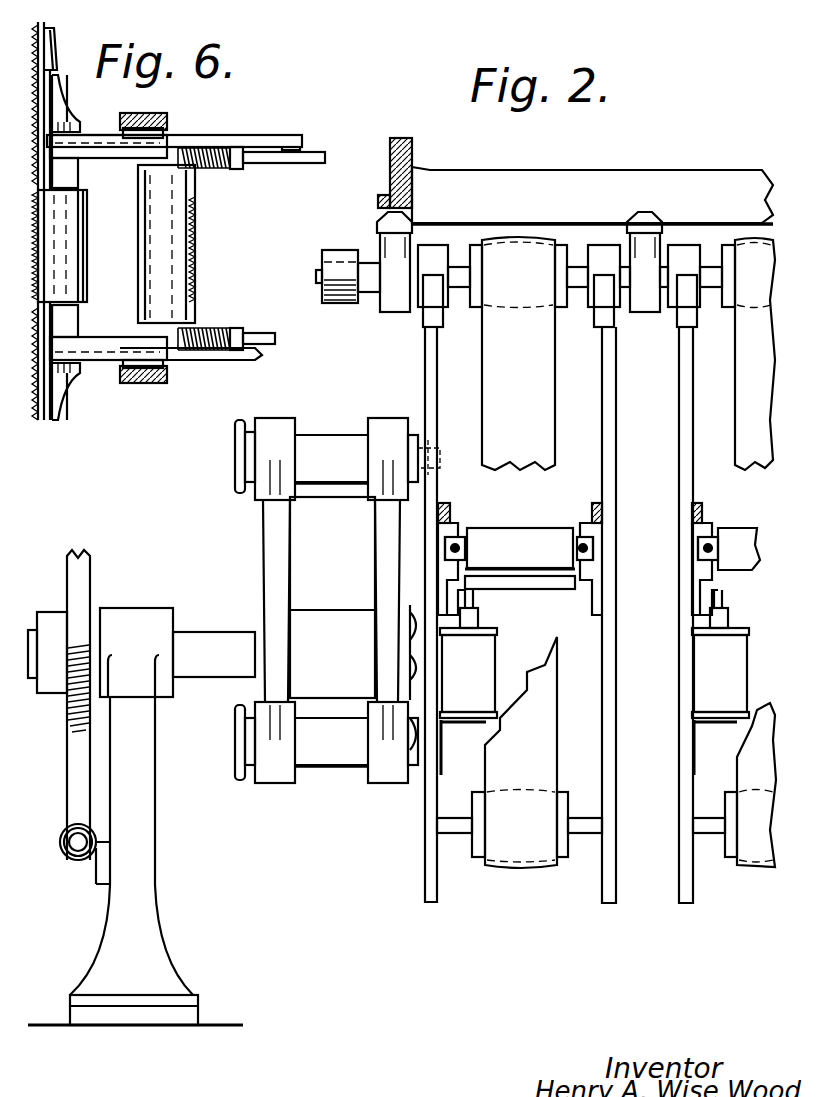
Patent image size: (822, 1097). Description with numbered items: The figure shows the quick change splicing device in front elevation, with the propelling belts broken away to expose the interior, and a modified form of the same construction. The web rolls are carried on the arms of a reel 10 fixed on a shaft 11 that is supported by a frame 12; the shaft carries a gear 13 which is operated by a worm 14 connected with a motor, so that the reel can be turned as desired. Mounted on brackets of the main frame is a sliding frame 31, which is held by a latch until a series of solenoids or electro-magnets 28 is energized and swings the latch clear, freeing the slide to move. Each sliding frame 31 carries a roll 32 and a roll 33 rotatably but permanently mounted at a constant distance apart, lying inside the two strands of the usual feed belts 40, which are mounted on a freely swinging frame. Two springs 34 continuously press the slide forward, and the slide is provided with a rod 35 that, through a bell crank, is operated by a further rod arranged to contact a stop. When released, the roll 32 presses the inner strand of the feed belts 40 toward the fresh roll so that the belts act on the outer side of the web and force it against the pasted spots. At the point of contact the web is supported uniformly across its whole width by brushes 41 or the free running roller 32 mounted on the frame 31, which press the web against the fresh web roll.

In FIG. 2, the reel 10 is at (280, 573).
In FIG. 2, the shaft 11 is at (205, 642).
In FIG. 2, the frame 12 is at (147, 900).
In FIG. 2, the gear 13 is at (80, 590).
In FIG. 2, the worm 14 is at (58, 844).
In FIG. 2, the solenoids or electro-magnets 28 is at (593, 711).
In FIG. 6, the sliding frame 31 is at (122, 166).
In FIG. 6, the roll 32 is at (86, 290).
In FIG. 6, the roll 33 is at (146, 292).
In FIG. 2, the roll 33 is at (516, 540).
In FIG. 6, the spring 34 is at (214, 170).
In FIG. 6, the rod 35 is at (304, 162).
In FIG. 2, the rod 35 is at (452, 548).
In FIG. 6, the feed belt 40 is at (34, 262).
In FIG. 2, the feed belt 40 is at (530, 465).
In FIG. 6, the brush 41 is at (36, 113).